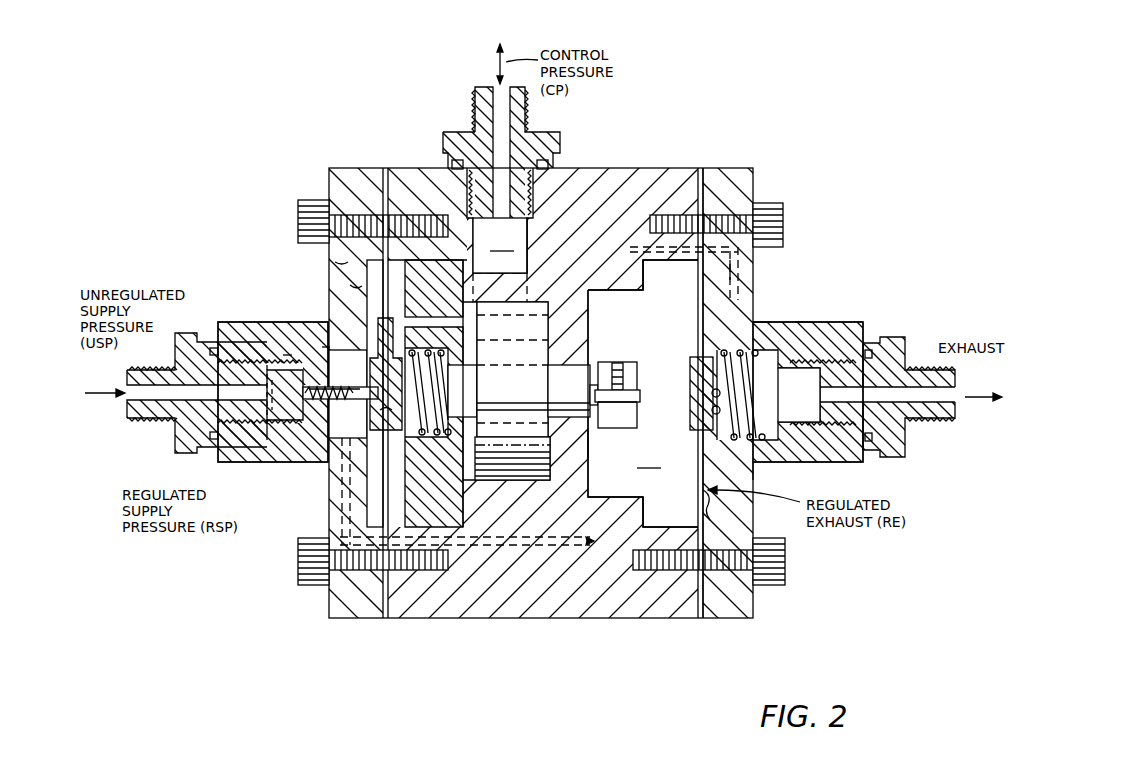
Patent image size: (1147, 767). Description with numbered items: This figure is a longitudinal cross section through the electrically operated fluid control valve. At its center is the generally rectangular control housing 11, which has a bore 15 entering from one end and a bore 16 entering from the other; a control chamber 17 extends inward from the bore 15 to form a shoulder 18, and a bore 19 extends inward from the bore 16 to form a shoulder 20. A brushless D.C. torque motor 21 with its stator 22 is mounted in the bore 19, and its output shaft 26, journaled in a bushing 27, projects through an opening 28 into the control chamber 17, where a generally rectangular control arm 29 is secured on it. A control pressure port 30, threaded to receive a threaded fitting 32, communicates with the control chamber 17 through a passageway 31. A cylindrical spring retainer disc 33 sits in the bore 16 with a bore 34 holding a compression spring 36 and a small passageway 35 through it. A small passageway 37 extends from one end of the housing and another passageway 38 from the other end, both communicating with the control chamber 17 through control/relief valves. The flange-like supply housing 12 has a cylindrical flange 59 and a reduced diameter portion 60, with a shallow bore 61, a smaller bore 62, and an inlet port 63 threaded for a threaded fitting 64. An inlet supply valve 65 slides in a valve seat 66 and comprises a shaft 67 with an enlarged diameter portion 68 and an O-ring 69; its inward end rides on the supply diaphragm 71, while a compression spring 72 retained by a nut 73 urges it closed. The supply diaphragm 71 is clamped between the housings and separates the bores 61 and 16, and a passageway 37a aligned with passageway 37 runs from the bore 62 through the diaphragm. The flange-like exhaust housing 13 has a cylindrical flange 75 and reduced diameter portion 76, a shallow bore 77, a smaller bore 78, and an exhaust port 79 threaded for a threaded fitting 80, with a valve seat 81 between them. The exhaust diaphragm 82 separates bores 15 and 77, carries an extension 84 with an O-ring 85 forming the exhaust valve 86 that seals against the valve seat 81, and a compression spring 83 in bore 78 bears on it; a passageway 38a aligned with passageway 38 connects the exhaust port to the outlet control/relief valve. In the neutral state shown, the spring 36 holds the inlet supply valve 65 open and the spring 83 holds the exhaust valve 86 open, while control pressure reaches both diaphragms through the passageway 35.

The control housing 11 is at (584, 618).
The supply housing 12 is at (238, 268).
The exhaust housing 13 is at (868, 282).
The bore 15 is at (660, 262).
The bore 16 is at (386, 275).
The control chamber 17 is at (616, 298).
The shoulder 18 is at (646, 512).
The bore 19 is at (473, 482).
The shoulder 20 is at (458, 570).
The brushless D.C. torque motor 21 is at (520, 397).
The stator 22 is at (528, 482).
The output shaft 26 is at (605, 362).
The bushing 27 is at (576, 393).
The opening 28 is at (582, 442).
The control arm 29 is at (618, 430).
The control pressure port 30 is at (527, 240).
The passageway 31 is at (540, 300).
The threaded fitting 32 is at (462, 132).
The spring retainer disc 33 is at (413, 619).
The bore 34 is at (573, 383).
The passageway 35 is at (573, 383).
The compression spring 36 is at (443, 392).
The passageway 37 is at (497, 549).
The passageway 37a is at (341, 488).
The passageway 38 is at (640, 247).
The passageway 38a is at (742, 300).
The cylindrical flange 59 is at (343, 619).
The reduced diameter portion 60 is at (573, 383).
The shallow bore 61 is at (335, 268).
The bore 62 is at (325, 348).
The inlet port 63 is at (285, 356).
The threaded fitting 64 is at (152, 420).
The inlet supply valve 65 is at (268, 432).
The valve seat 66 is at (313, 405).
The shaft 67 is at (380, 410).
The enlarged diameter portion 68 is at (290, 378).
The O-ring 69 is at (277, 416).
The supply diaphragm 71 is at (350, 290).
The compression spring 72 is at (376, 390).
The nut 73 is at (372, 292).
The cylindrical flange 75 is at (727, 608).
The reduced diameter portion 76 is at (836, 322).
The shallow bore 77 is at (736, 268).
The bore 78 is at (766, 312).
The exhaust port 79 is at (800, 322).
The threaded fitting 80 is at (890, 340).
The valve seat 81 is at (764, 399).
The exhaust diaphragm 82 is at (712, 513).
The compression spring 83 is at (705, 358).
The extension 84 is at (700, 386).
The O-ring 85 is at (708, 410).
The exhaust valve 86 is at (758, 472).